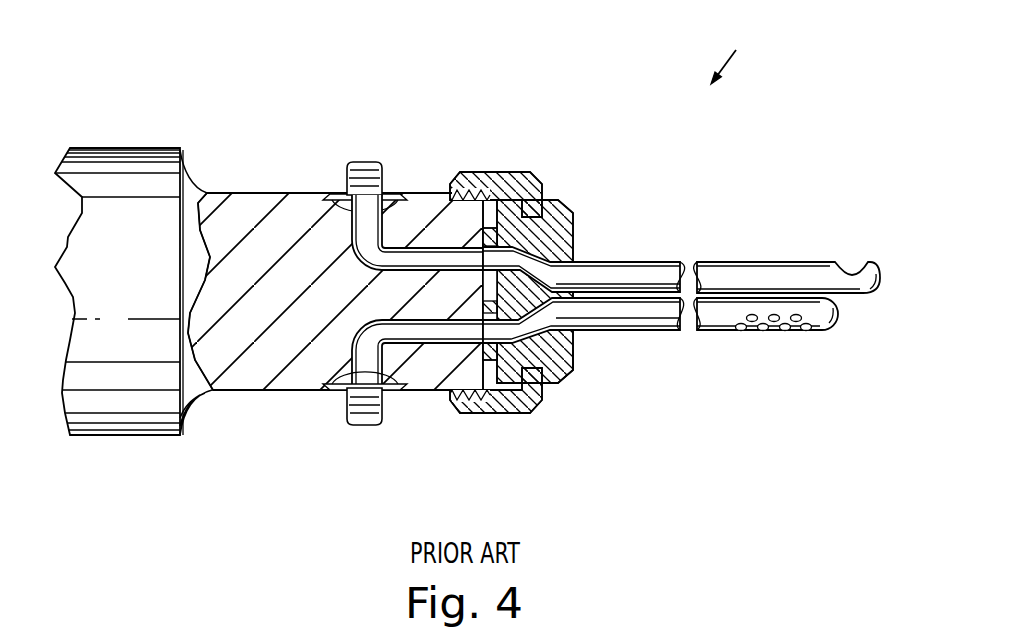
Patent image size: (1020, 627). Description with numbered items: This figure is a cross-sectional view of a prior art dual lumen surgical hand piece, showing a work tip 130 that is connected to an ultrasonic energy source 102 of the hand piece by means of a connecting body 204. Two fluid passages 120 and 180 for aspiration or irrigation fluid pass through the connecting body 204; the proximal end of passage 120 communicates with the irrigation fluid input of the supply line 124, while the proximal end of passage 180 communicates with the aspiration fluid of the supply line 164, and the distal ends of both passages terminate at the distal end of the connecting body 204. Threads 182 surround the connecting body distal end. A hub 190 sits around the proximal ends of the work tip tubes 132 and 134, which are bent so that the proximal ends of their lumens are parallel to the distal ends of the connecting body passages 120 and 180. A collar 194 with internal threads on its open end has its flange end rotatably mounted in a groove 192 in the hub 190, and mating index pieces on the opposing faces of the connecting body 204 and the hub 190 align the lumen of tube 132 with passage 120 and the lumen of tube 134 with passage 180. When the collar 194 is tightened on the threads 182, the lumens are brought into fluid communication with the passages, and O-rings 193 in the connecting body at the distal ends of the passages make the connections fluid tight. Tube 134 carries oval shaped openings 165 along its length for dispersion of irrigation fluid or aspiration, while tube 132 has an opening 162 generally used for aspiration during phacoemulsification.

The ultrasonic energy source 102 is at (118, 160).
The fluid passage 120 is at (350, 220).
The supply line 124 is at (347, 182).
The work tip 130 is at (732, 48).
The tube 132 is at (633, 262).
The tube 134 is at (638, 324).
The opening 162 is at (845, 272).
The supply line 164 is at (347, 412).
The oval shaped openings 165 is at (765, 331).
The fluid passage 180 is at (352, 340).
The threads 182 is at (474, 395).
The hub 190 is at (567, 380).
The groove 192 is at (570, 205).
The O-rings 193 is at (486, 300).
The collar 194 is at (488, 172).
The connecting body 204 is at (228, 378).